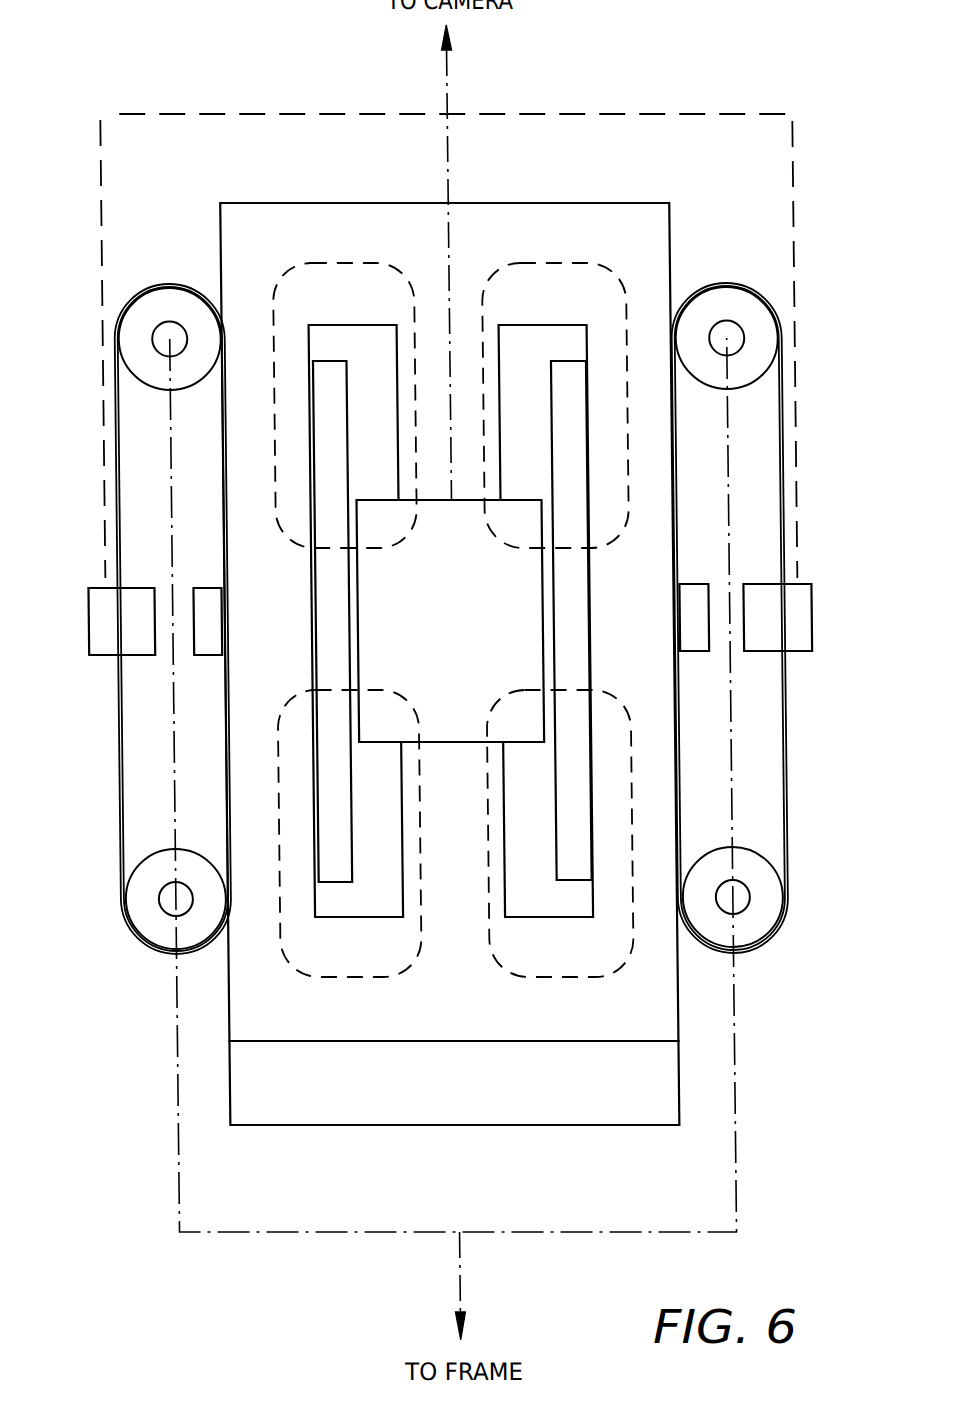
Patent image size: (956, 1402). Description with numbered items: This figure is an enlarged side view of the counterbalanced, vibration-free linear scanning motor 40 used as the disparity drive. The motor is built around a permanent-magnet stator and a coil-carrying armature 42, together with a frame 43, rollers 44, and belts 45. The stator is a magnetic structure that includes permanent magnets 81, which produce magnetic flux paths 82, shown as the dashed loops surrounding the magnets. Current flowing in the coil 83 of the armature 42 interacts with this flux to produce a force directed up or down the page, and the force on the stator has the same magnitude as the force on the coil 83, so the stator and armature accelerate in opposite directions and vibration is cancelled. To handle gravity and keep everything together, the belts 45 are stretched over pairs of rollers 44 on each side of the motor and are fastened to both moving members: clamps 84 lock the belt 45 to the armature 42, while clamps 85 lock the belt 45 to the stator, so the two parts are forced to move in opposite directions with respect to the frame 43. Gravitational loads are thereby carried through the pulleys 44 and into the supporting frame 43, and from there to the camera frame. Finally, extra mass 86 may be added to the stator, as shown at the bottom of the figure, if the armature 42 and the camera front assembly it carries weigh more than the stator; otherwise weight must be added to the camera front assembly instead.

The scanning motor 40 is at (826, 263).
The armature 42 is at (99, 180).
The frame 43 is at (166, 1185).
The rollers 44 is at (145, 305).
The belts 45 is at (111, 735).
The permanent magnets 81 is at (341, 448).
The magnetic flux paths 82 is at (315, 262).
The coil 83 is at (458, 633).
The clamps 84 is at (127, 600).
The clamps 85 is at (199, 590).
The extra mass 86 is at (464, 1094).